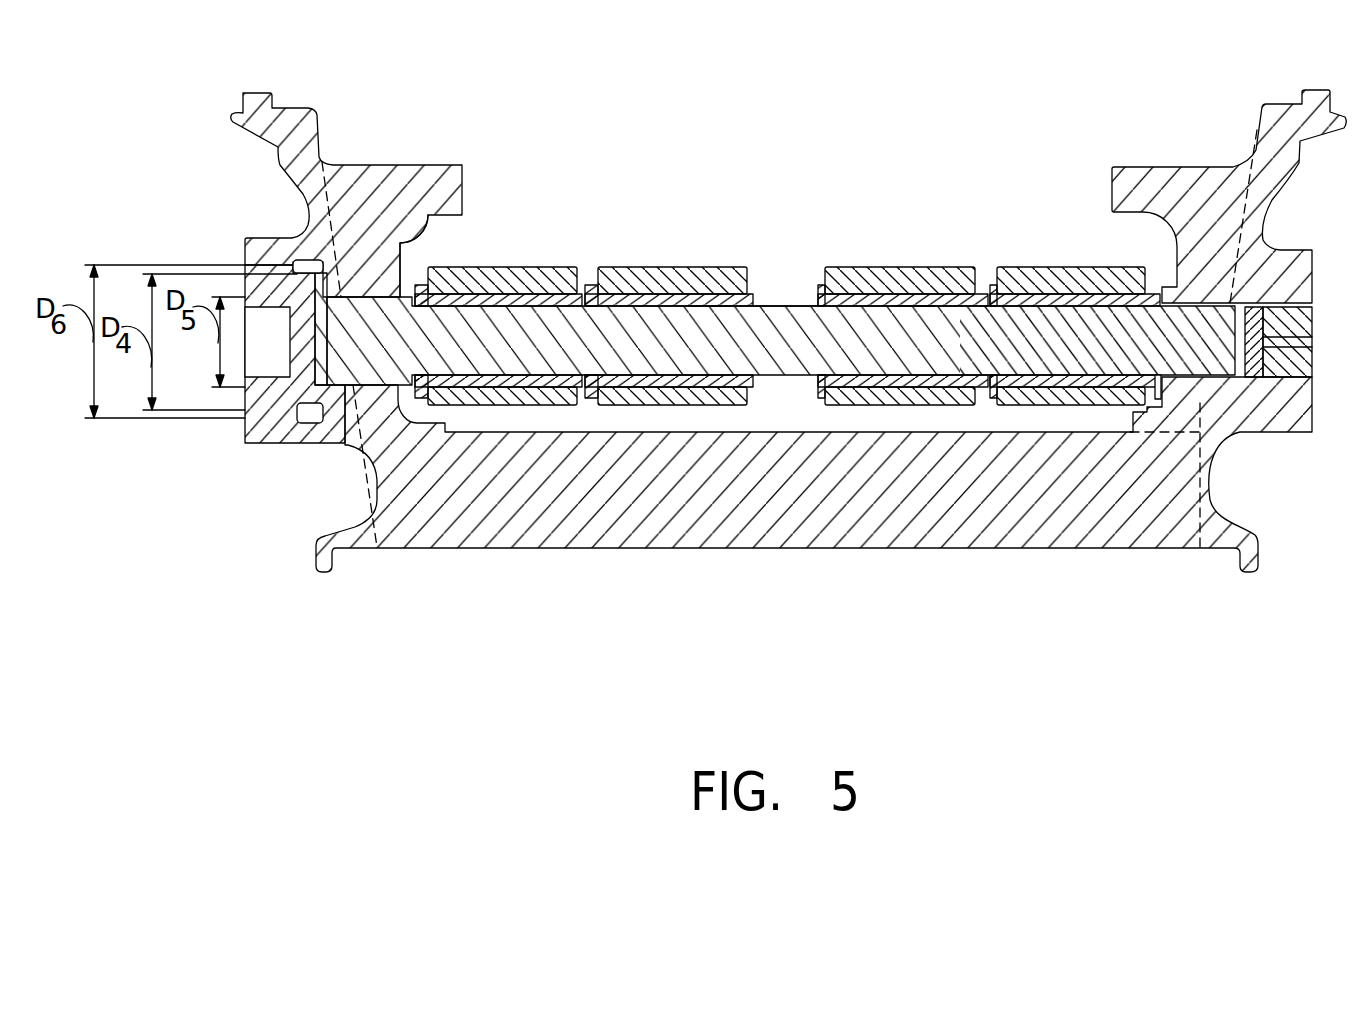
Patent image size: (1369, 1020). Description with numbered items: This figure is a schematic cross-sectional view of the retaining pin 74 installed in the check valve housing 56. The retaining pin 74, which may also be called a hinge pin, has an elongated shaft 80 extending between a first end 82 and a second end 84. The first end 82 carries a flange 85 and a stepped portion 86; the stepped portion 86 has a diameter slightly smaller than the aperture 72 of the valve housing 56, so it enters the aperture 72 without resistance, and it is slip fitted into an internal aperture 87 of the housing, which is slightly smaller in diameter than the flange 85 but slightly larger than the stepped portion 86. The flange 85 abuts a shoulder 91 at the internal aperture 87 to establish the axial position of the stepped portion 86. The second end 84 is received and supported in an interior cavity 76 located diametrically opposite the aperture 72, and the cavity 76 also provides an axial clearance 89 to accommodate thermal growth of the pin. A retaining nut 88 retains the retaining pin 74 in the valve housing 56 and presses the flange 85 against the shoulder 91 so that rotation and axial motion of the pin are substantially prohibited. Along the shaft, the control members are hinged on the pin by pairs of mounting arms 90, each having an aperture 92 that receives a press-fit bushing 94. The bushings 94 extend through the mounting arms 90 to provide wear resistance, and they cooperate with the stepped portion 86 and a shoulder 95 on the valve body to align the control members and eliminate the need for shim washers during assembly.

The valve housing 56 is at (337, 162).
The aperture 72 is at (245, 265).
The retaining pin 74 is at (777, 306).
The interior cavity 76 is at (1248, 375).
The elongated shaft 80 is at (793, 303).
The first end 82 is at (405, 276).
The second end 84 is at (1313, 296).
The flange 85 is at (312, 428).
The stepped portion 86 is at (352, 450).
The internal aperture 87 is at (375, 488).
The retaining nut 88 is at (245, 405).
The axial clearance 89 is at (1313, 357).
The mounting arms 90 is at (533, 265).
The shoulder 91 is at (400, 250).
The aperture 92 is at (712, 305).
The bushings 94 is at (582, 282).
The shoulder 95 is at (1145, 385).